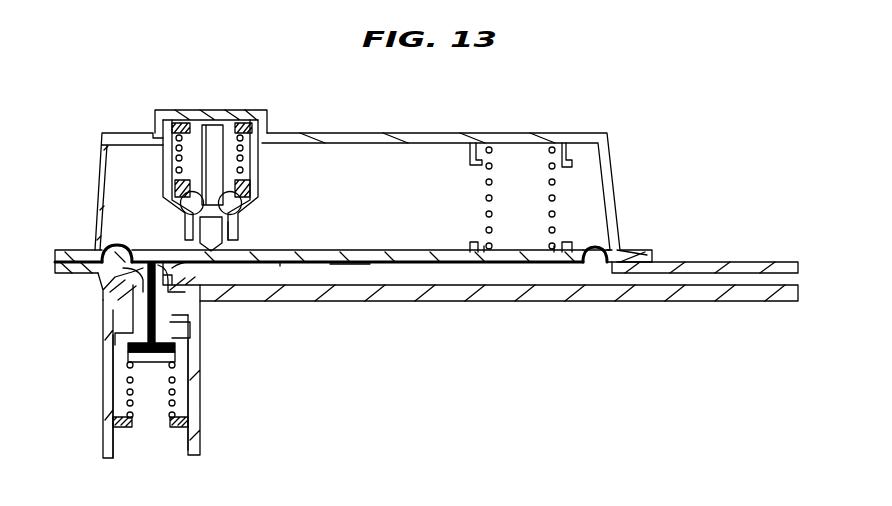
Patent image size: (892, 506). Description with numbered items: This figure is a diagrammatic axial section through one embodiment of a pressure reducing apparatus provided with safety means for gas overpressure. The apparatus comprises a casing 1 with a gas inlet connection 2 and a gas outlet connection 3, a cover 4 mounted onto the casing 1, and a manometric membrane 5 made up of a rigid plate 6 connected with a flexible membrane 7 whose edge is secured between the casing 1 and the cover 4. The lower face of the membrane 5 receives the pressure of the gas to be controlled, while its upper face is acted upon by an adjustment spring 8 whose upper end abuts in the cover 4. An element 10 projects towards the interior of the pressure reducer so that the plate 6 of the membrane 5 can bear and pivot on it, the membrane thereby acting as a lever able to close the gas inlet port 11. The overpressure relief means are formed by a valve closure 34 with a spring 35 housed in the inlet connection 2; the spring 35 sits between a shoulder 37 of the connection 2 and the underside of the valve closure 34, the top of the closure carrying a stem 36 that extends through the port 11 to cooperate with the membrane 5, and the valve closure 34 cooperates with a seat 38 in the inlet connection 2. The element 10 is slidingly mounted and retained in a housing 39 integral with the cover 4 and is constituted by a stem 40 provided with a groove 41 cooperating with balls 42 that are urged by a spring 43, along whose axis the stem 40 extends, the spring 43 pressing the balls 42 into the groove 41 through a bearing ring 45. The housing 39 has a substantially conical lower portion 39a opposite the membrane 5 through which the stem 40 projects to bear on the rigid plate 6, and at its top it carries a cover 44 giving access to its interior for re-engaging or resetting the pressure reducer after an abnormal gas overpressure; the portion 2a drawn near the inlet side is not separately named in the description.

The casing 1 is at (462, 295).
The gas inlet connection 2 is at (213, 380).
The housing portion 2a is at (143, 270).
The gas outlet connection 3 is at (737, 293).
The cover 4 is at (425, 138).
The manometric membrane 5 is at (347, 267).
The rigid plate 6 is at (363, 252).
The flexible membrane 7 is at (282, 266).
The adjustment spring 8 is at (647, 182).
The element 10 is at (207, 162).
The gas inlet port 11 is at (143, 287).
The valve closure 34 is at (118, 348).
The spring 35 is at (130, 403).
The stem 36 is at (183, 318).
The shoulder 37 is at (128, 427).
The seat 38 is at (190, 395).
The housing 39 is at (168, 168).
The conical lower portion 39a is at (240, 245).
The stem 40 is at (212, 140).
The groove 41 is at (227, 163).
The balls 42 is at (180, 210).
The spring 43 is at (195, 110).
The cover 44 is at (245, 112).
The bearing ring 45 is at (166, 176).